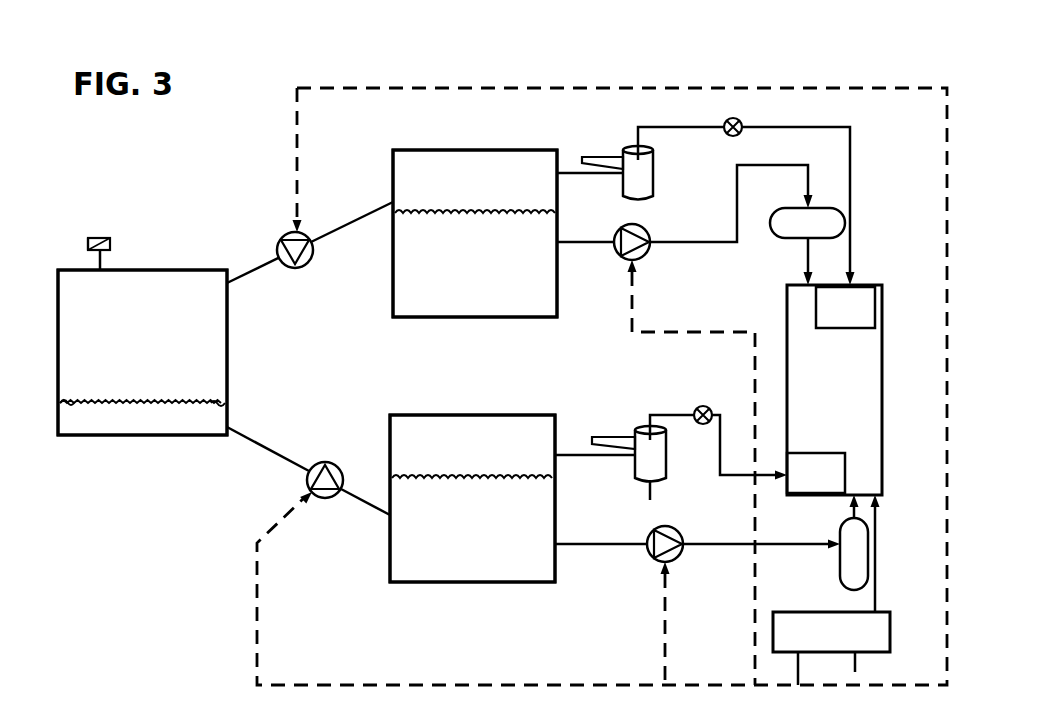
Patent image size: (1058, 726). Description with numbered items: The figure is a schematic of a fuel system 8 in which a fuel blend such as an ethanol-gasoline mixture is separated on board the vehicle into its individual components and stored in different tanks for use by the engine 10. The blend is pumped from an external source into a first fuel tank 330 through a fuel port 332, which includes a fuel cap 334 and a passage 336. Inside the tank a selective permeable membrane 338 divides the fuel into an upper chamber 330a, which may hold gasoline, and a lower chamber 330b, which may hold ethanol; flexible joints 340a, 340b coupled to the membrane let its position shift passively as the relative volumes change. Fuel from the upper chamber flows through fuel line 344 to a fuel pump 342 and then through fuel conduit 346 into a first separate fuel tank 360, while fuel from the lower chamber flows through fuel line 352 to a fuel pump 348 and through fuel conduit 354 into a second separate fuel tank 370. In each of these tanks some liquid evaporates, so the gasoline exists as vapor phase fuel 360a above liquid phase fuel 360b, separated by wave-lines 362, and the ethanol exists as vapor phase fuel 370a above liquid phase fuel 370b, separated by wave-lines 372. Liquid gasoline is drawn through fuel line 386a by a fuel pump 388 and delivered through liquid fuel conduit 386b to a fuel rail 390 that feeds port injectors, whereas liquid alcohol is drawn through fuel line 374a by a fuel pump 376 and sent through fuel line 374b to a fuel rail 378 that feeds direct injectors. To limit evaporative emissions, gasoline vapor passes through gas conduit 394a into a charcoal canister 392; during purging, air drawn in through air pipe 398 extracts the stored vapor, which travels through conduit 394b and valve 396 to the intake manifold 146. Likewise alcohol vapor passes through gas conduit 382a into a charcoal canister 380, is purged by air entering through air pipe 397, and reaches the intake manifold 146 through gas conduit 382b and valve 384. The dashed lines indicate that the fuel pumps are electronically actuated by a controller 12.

The fuel system 8 is at (92, 168).
The engine 10 is at (862, 385).
The controller 12 is at (878, 626).
The intake manifold 146 is at (831, 390).
The first fuel tank 330 is at (186, 268).
The upper chamber 330a is at (142, 336).
The lower chamber 330b is at (142, 419).
The fuel port 332 is at (112, 245).
The fuel cap 334 is at (88, 238).
The passage 336 is at (98, 262).
The selective permeable membrane 338 is at (142, 400).
The flexible joint 340a is at (80, 396).
The flexible joint 340b is at (215, 393).
The fuel pump 342 is at (283, 240).
The fuel line 344 is at (260, 263).
The fuel conduit 346 is at (343, 227).
The fuel pump 348 is at (322, 462).
The fuel line 352 is at (262, 450).
The fuel conduit 354 is at (357, 500).
The first separate fuel tank 360 is at (393, 150).
The vapor phase fuel 360a is at (475, 181).
The liquid phase fuel 360b is at (475, 265).
The wave-lines 362 is at (463, 222).
The second separate fuel tank 370 is at (390, 415).
The vapor phase fuel 370a is at (472, 446).
The liquid phase fuel 370b is at (472, 530).
The wave-lines 372 is at (457, 490).
The fuel line 374a is at (632, 546).
The fuel line 374b is at (692, 548).
The fuel pump 376 is at (678, 532).
The fuel rail 378 is at (845, 590).
The charcoal canister 380 is at (638, 469).
The gas conduit 382a is at (625, 458).
The gas conduit 382b is at (667, 402).
The valve 384 is at (717, 400).
The fuel line 386a is at (567, 245).
The liquid fuel conduit 386b is at (681, 243).
The fuel pump 388 is at (645, 226).
The fuel rail 390 is at (790, 203).
The charcoal canister 392 is at (654, 175).
The gas conduit 394a is at (613, 177).
The conduit 394b is at (667, 115).
The valve 396 is at (741, 120).
The air pipe 397 is at (606, 431).
The air pipe 398 is at (591, 156).